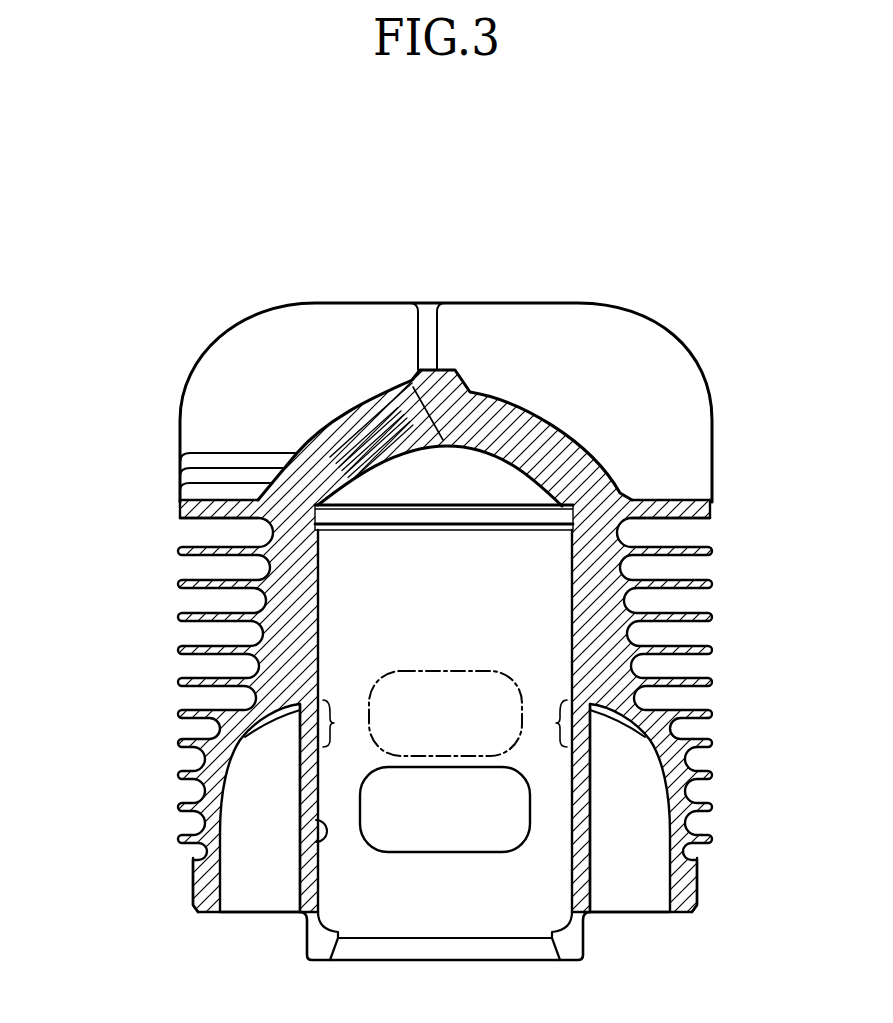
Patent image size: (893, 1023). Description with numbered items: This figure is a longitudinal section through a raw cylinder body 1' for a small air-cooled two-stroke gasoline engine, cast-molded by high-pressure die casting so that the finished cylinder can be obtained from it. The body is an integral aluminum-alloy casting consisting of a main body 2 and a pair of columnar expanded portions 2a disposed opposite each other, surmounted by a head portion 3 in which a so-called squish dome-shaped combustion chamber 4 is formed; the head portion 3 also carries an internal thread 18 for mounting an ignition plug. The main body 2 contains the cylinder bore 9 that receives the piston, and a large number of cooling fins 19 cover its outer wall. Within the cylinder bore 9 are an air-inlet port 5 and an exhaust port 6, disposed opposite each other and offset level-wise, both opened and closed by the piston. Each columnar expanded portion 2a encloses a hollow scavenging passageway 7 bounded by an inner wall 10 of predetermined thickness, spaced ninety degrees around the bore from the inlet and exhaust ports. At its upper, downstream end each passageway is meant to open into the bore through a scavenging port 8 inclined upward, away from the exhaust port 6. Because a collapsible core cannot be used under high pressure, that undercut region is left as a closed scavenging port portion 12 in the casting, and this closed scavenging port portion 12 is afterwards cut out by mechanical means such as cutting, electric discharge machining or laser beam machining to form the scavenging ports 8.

The raw cylinder body 1' is at (428, 610).
The main body 2 is at (172, 616).
The columnar expanded portions 2a is at (192, 879).
The head portion 3 is at (520, 402).
The combustion chamber 4 is at (500, 493).
The air-inlet port 5 is at (503, 678).
The exhaust port 6 is at (385, 840).
The hollow scavenging passageway 7 is at (215, 785).
The scavenging port 8 is at (225, 723).
The cylinder bore 9 is at (305, 817).
The inner wall 10 is at (305, 865).
The closed scavenging port portion 12 is at (444, 626).
The internal thread 18 is at (390, 427).
The cooling fins 19 is at (706, 613).